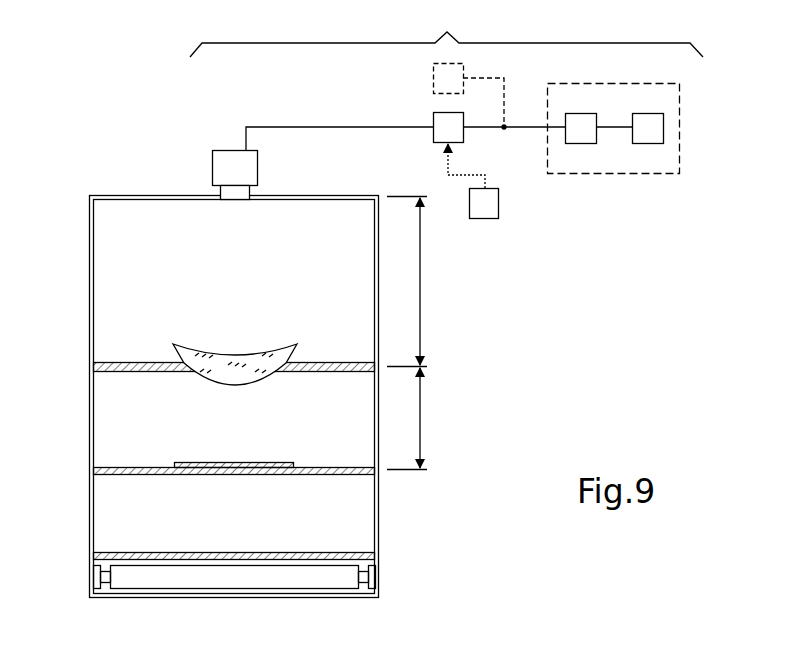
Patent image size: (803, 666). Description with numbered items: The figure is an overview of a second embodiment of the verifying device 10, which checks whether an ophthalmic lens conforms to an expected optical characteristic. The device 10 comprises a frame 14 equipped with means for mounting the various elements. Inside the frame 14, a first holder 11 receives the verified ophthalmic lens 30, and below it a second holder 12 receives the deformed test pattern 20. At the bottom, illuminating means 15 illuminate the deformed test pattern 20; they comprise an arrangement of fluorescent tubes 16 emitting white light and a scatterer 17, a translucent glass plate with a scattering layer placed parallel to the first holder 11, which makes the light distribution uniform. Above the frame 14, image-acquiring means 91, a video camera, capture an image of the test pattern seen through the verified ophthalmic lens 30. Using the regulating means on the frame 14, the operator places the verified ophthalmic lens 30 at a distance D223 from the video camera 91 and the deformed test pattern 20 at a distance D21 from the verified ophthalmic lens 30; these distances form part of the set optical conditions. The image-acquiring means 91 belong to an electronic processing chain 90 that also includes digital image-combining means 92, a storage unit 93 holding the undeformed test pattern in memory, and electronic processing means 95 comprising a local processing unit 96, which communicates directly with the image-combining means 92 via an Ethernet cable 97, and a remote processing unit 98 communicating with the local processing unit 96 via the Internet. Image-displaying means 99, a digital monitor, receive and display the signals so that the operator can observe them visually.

The verifying device 10 is at (593, 353).
The first holder 11 is at (128, 362).
The second holder 12 is at (126, 467).
The frame 14 is at (89, 414).
The illuminating means 15 is at (201, 606).
The fluorescent tubes 16 is at (198, 582).
The scatterer 17 is at (130, 552).
The deformed test pattern 20 is at (272, 462).
The verified ophthalmic lens 30 is at (225, 392).
The electronic processing chain 90 is at (446, 28).
The image-acquiring means 91 is at (212, 168).
The image-combining means 92 is at (433, 135).
The storage unit 93 is at (498, 203).
The electronic processing means 95 is at (641, 129).
The local processing unit 96 is at (577, 113).
The Ethernet cable 97 is at (505, 130).
The remote processing unit 98 is at (647, 143).
The image-displaying means 99 is at (433, 78).
The distance between verified lens and video camera D223 is at (420, 275).
The distance between deformed test pattern and verified lens D21 is at (420, 415).